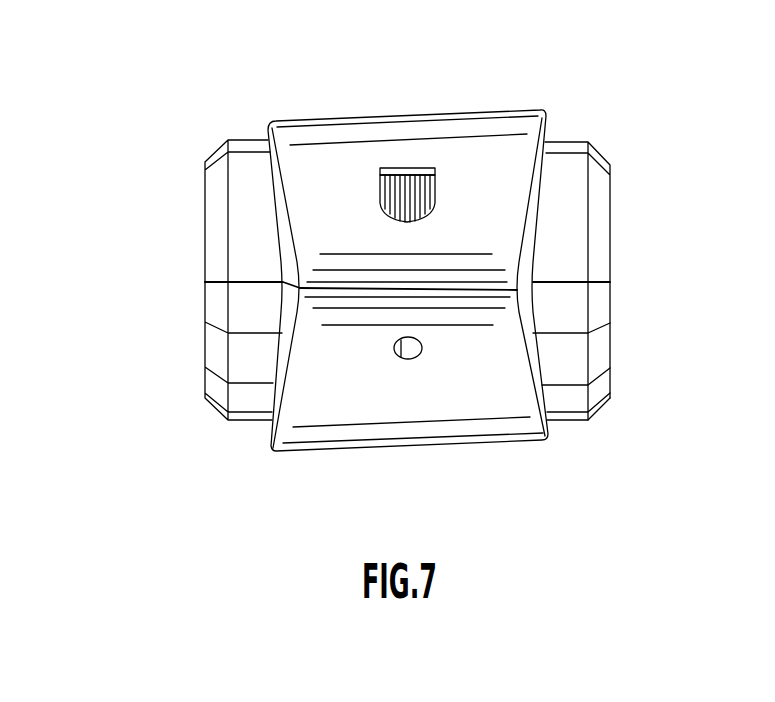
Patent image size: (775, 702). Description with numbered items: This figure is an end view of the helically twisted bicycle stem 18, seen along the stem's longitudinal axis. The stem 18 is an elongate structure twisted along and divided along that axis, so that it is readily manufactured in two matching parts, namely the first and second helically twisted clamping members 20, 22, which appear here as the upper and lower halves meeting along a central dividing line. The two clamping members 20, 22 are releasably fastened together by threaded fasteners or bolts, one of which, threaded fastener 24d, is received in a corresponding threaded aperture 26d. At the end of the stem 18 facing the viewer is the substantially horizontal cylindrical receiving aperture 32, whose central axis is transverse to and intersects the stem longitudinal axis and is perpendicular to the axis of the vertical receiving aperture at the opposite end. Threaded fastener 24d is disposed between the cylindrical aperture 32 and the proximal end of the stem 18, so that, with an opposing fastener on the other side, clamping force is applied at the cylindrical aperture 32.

The twisted bicycle stem 18 is at (455, 130).
The first helically twisted clamping member 20 is at (237, 180).
The second helically twisted clamping member 22 is at (250, 315).
The threaded fastener 24d is at (383, 183).
The threaded aperture 26d is at (413, 352).
The horizontal cylindrical receiving aperture 32 is at (642, 278).